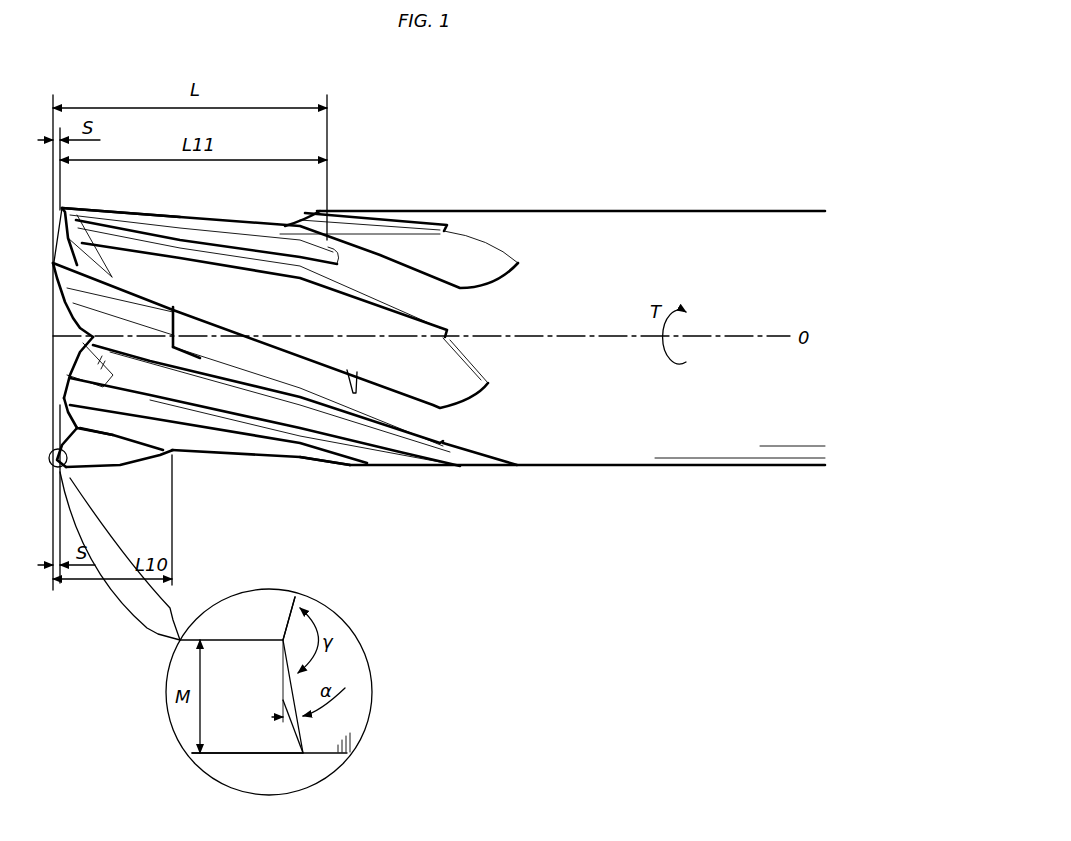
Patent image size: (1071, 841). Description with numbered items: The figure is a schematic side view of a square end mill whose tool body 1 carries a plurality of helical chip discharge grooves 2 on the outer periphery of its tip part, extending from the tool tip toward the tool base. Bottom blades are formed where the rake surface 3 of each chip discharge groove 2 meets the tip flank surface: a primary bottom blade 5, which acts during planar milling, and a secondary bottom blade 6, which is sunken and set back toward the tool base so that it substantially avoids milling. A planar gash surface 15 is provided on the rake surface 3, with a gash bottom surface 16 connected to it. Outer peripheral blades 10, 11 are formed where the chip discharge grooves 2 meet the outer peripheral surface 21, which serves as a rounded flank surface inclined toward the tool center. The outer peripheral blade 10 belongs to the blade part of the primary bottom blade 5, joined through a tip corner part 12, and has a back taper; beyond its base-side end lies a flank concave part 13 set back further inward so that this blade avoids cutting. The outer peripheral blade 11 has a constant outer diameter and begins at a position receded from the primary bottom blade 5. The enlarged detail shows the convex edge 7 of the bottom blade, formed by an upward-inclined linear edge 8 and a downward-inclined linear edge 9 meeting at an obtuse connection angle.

The tool body 1 is at (660, 212).
The chip discharge groove 2 is at (410, 370).
The rake surface 3 is at (110, 444).
The primary bottom blade 5 is at (52, 257).
The secondary bottom blade 6 is at (58, 208).
The convex edge 7 is at (49, 455).
The linear edge 8 is at (300, 737).
The linear edge 9 is at (289, 620).
The outer peripheral blade 10 is at (161, 294).
The outer peripheral blade 11 is at (115, 207).
The tip corner part 12 is at (309, 759).
The flank concave part 13 is at (203, 316).
The gash surface 15 is at (76, 372).
The gash bottom surface 16 is at (77, 346).
The outer peripheral surface 21 is at (77, 289).